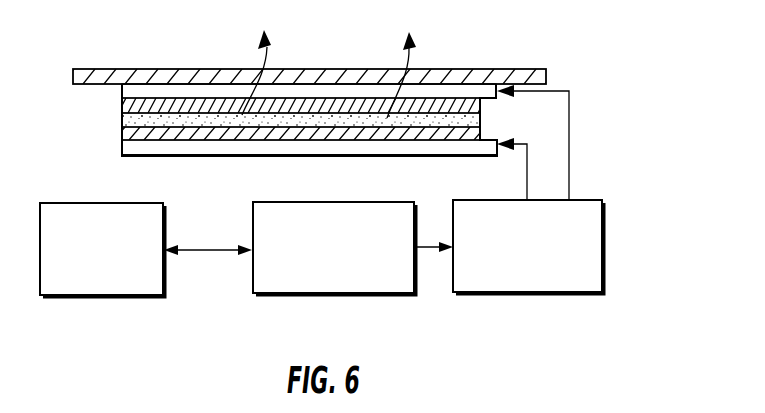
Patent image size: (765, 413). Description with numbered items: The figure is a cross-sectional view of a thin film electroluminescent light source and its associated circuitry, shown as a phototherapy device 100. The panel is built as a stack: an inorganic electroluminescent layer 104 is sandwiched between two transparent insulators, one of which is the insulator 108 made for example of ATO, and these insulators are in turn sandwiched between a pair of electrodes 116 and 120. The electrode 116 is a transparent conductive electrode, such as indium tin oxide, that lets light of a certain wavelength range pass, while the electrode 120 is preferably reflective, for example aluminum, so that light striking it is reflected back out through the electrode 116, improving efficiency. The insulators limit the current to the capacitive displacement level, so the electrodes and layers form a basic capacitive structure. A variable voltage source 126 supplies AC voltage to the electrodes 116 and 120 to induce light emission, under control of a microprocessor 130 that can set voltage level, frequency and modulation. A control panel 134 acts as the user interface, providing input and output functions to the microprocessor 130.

The TFEL panel and associated circuitry 100 is at (678, 132).
The inorganic electroluminescent layer 104 is at (132, 120).
The transparent insulator 108 is at (130, 108).
The transparent conductive electrode 116 is at (137, 90).
The reflective electrode 120 is at (220, 150).
The variable voltage source 126 is at (487, 292).
The microprocessor 130 is at (333, 293).
The control panel 134 is at (102, 295).